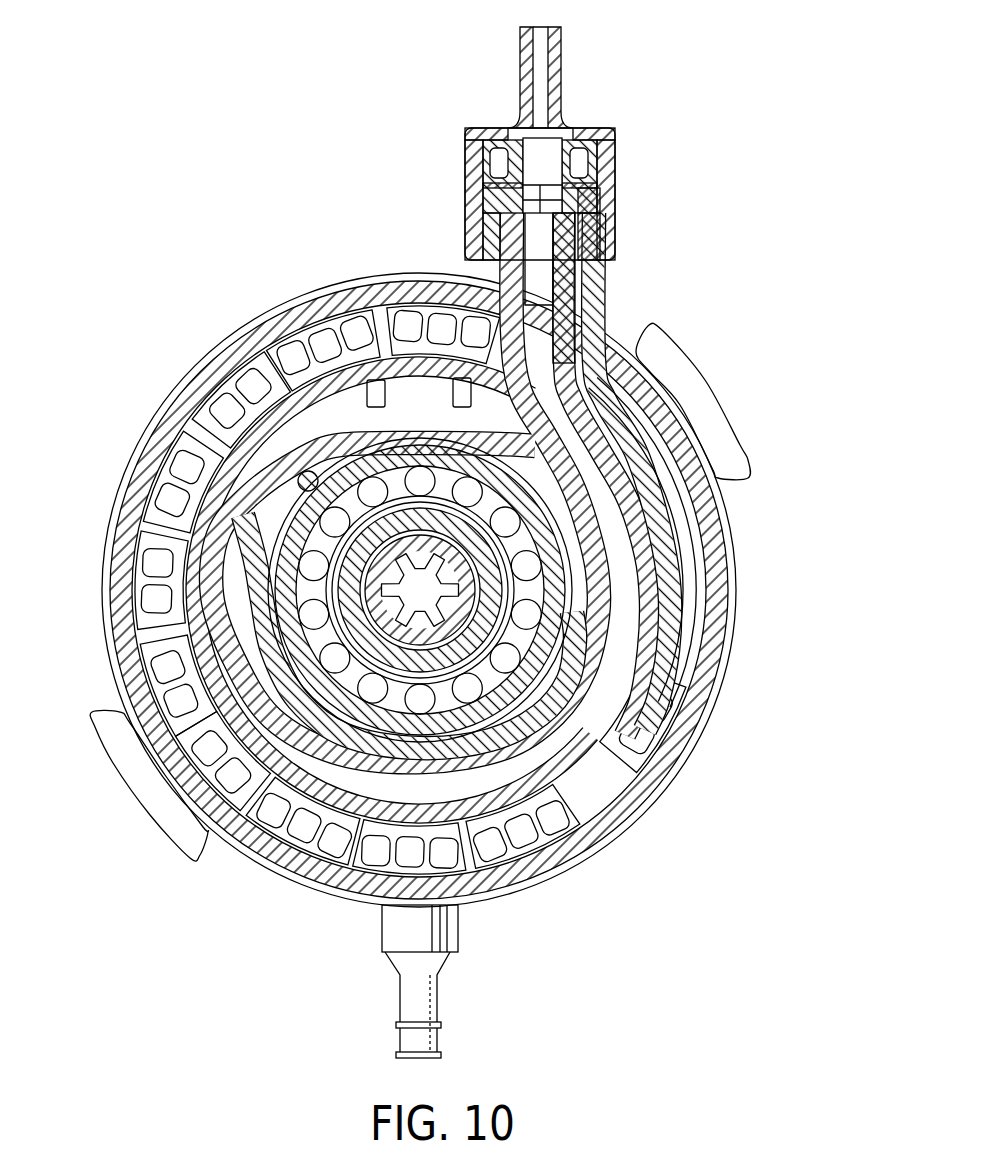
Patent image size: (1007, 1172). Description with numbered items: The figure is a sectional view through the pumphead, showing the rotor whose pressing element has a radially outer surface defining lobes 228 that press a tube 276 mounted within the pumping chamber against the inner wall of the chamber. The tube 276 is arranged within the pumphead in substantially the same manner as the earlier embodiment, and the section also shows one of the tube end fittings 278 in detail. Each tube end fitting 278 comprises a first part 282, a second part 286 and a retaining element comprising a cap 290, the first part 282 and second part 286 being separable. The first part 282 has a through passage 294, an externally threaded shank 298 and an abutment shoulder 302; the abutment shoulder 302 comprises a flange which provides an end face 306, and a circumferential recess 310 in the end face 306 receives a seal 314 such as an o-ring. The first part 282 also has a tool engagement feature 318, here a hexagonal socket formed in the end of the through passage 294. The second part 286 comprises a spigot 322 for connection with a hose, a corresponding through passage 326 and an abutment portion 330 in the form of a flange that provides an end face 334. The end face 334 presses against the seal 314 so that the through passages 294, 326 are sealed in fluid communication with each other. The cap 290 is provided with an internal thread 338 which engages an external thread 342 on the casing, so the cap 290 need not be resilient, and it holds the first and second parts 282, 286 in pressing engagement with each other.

The lobes 228 is at (545, 712).
The tube 276 is at (648, 577).
The tube end fitting 278 is at (547, 195).
The first part 282 is at (597, 205).
The second part 286 is at (522, 58).
The cap 290 is at (605, 146).
The through passage 294 is at (600, 268).
The externally threaded shank 298 is at (578, 288).
The abutment shoulder 302 is at (470, 188).
The end face 306 is at (480, 135).
The circumferential recess 310 is at (610, 182).
The seal 314 is at (470, 168).
The tool engagement feature 318 is at (470, 242).
The spigot 322 is at (560, 60).
The through passage 326 is at (546, 100).
The abutment portion 330 is at (590, 130).
The end face 334 is at (612, 166).
The internal thread 338 is at (603, 226).
The external thread 342 is at (608, 242).